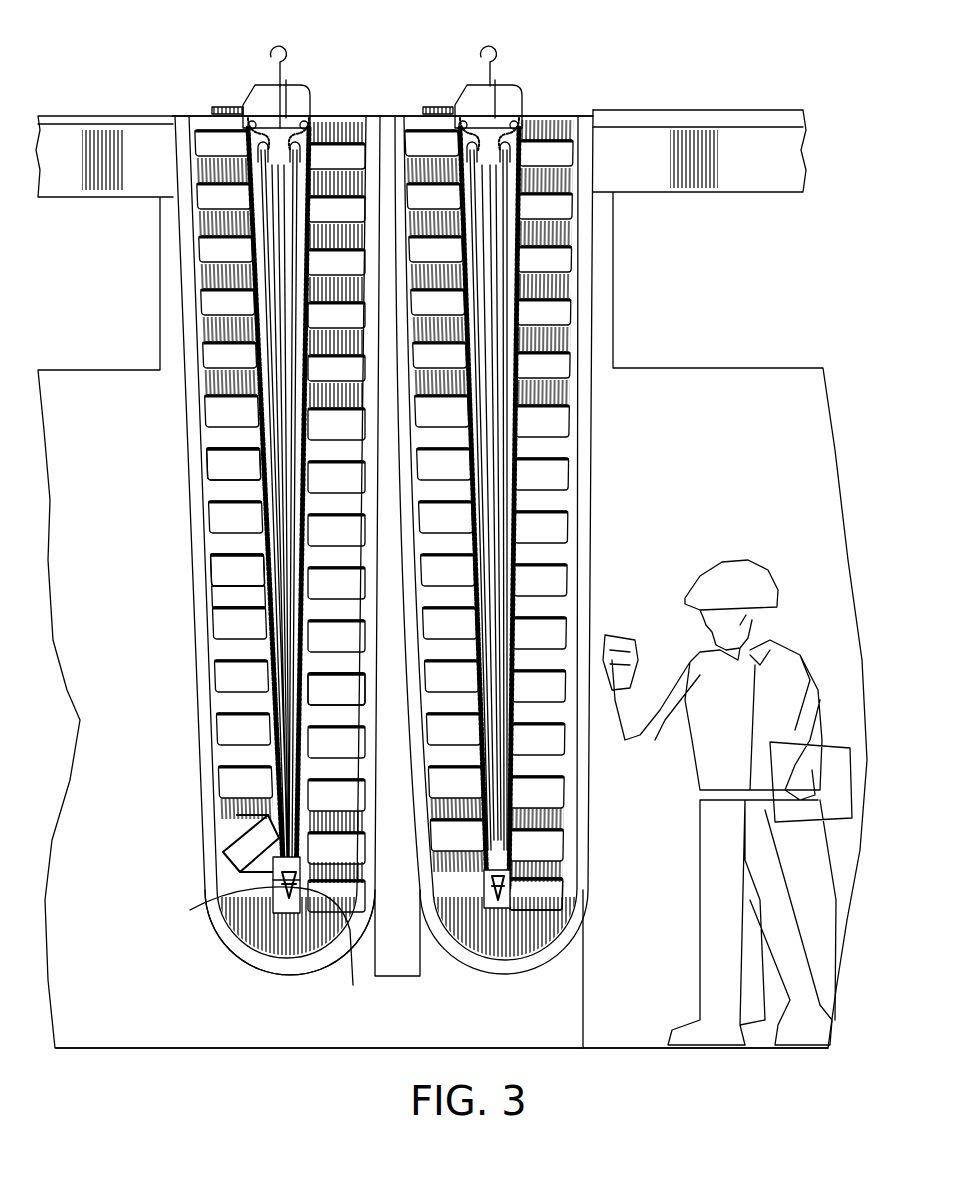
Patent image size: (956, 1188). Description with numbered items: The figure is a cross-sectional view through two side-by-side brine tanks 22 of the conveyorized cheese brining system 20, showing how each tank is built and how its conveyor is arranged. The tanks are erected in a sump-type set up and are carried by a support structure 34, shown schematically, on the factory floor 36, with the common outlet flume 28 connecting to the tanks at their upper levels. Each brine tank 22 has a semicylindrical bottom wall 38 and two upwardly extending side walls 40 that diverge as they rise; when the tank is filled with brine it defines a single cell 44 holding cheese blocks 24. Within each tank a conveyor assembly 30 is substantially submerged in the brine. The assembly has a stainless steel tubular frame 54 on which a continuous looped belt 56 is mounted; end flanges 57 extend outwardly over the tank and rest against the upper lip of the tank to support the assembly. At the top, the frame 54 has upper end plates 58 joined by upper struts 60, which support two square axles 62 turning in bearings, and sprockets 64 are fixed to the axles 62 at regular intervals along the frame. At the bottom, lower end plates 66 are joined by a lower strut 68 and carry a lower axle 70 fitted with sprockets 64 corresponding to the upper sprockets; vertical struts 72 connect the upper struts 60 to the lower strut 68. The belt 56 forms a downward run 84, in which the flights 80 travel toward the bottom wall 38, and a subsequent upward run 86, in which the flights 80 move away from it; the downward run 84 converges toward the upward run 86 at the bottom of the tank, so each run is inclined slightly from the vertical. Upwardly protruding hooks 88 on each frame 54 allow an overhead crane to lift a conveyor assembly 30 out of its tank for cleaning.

The conveyorized cheese brining system 20 is at (620, 78).
The brine tank 22 is at (188, 306).
The cheese block 24 is at (228, 818).
The common outlet flume 28 is at (740, 105).
The conveyor assembly 30 is at (220, 445).
The support structure 34 is at (590, 985).
The factory floor 36 is at (596, 1046).
The bottom wall 38 is at (215, 970).
The side wall 40 is at (215, 712).
The cell 44 is at (208, 540).
The tubular frame 54 is at (245, 100).
The continuous looped belt 56 is at (260, 592).
The end flange 57 is at (216, 107).
The upper end plate 58 is at (300, 88).
The upper strut 60 is at (256, 86).
The square axle 62 is at (412, 50).
The sprocket 64 is at (338, 128).
The lower end plate 66 is at (268, 882).
The lower strut 68 is at (270, 880).
The lower axle 70 is at (278, 950).
The vertical strut 72 is at (288, 210).
The flight 80 is at (237, 458).
The downward run 84 is at (228, 625).
The upward run 86 is at (350, 656).
The hook 88 is at (272, 52).